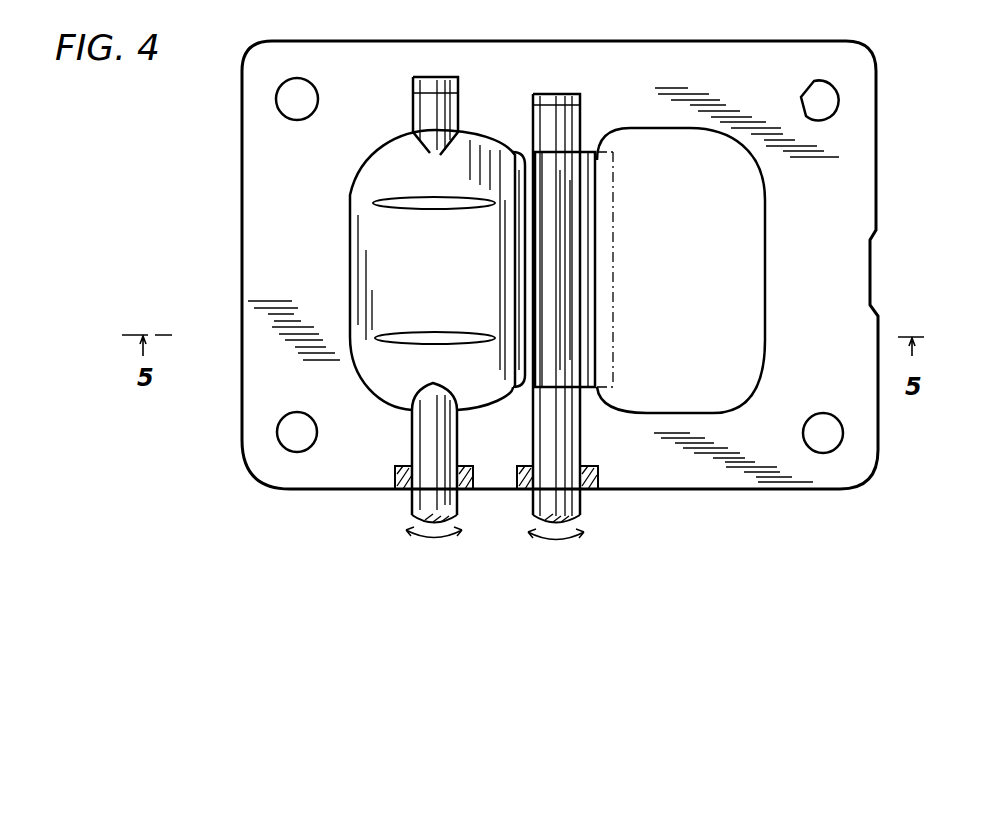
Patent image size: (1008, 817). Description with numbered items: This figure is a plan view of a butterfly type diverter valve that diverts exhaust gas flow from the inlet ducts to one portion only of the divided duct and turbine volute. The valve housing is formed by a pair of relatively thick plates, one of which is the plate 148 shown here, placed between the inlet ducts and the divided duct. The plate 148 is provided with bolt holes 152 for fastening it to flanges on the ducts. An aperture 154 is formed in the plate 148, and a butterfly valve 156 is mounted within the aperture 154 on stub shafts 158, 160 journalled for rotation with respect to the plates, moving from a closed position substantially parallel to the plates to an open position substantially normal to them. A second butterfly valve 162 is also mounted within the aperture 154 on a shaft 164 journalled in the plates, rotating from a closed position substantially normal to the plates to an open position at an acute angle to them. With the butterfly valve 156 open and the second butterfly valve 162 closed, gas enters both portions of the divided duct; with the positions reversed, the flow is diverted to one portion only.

The plate 148 is at (713, 490).
The bolt holes 152 is at (836, 83).
The aperture 154 is at (762, 338).
The butterfly valve 156 is at (448, 290).
The stub shaft 158 is at (412, 505).
The stub shaft 160 is at (447, 110).
The second butterfly valve 162 is at (603, 386).
The shaft 164 is at (578, 503).